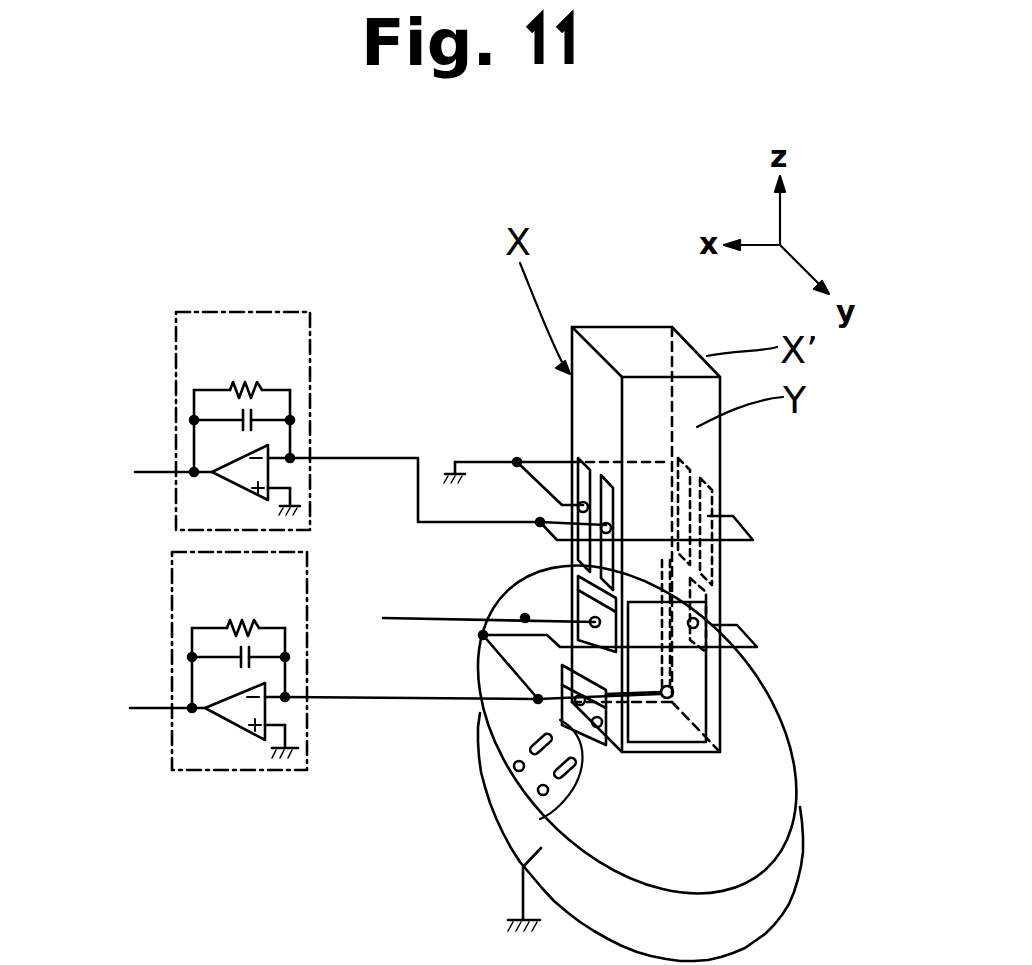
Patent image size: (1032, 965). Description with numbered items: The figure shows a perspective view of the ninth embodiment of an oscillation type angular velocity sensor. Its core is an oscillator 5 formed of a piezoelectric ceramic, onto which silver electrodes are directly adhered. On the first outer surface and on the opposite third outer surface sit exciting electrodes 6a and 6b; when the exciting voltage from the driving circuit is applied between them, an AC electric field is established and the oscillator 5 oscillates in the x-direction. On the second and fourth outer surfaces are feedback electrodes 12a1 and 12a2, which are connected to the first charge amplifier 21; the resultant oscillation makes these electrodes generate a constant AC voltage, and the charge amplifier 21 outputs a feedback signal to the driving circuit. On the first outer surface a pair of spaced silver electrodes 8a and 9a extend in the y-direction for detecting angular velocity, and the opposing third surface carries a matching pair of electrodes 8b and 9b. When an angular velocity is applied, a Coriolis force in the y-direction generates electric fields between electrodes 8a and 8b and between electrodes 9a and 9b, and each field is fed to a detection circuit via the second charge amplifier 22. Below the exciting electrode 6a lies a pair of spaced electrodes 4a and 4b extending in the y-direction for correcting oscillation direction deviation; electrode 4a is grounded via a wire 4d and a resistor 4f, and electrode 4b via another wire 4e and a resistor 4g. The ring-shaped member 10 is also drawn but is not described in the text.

The second charge amplifier 22 is at (176, 322).
The first charge amplifier 21 is at (172, 563).
The oscillator 5 is at (590, 360).
The silver electrode 8a is at (572, 462).
The silver electrode 9a is at (603, 478).
The silver electrode 8b is at (690, 483).
The silver electrode 9b is at (710, 493).
The exciting electrode 6a is at (577, 598).
The exciting electrode 6b is at (707, 598).
The silver electrode for correcting oscillation direction deviation 4a is at (565, 678).
The silver electrode for correcting oscillation direction deviation 4b is at (765, 872).
The wire 4d is at (560, 720).
The wire 4e is at (540, 790).
The resistor 4f is at (558, 722).
The resistor 4g is at (547, 818).
The base ring 10 is at (795, 853).
The feedback electrode 12a1 is at (690, 683).
The feedback electrode 12a2 is at (647, 582).